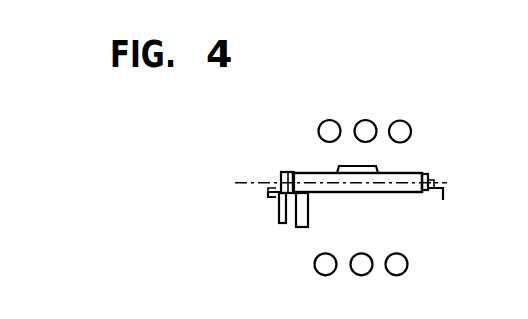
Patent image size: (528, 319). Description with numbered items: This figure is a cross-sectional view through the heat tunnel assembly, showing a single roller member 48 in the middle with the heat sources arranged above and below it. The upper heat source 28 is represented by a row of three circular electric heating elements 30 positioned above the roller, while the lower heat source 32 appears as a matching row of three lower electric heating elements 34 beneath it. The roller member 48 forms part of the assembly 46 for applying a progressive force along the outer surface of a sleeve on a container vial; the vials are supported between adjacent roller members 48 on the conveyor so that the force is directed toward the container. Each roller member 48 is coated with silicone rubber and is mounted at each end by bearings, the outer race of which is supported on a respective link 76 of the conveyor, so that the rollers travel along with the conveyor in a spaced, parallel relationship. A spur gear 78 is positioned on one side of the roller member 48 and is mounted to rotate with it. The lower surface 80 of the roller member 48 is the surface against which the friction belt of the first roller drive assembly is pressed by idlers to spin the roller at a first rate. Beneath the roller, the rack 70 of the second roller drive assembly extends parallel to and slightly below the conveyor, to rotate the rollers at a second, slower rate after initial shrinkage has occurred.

The upper heat source 28 is at (383, 121).
The electric heating elements 30 is at (326, 121).
The lower heat source 32 is at (320, 278).
The lower electric heating elements 34 is at (408, 268).
The assembly for applying a progressive force 46 is at (407, 171).
The roller member 48 is at (424, 174).
The rack 70 is at (280, 222).
The link 76 is at (276, 196).
The spur gear 78 is at (290, 173).
The lower surface 80 is at (358, 193).